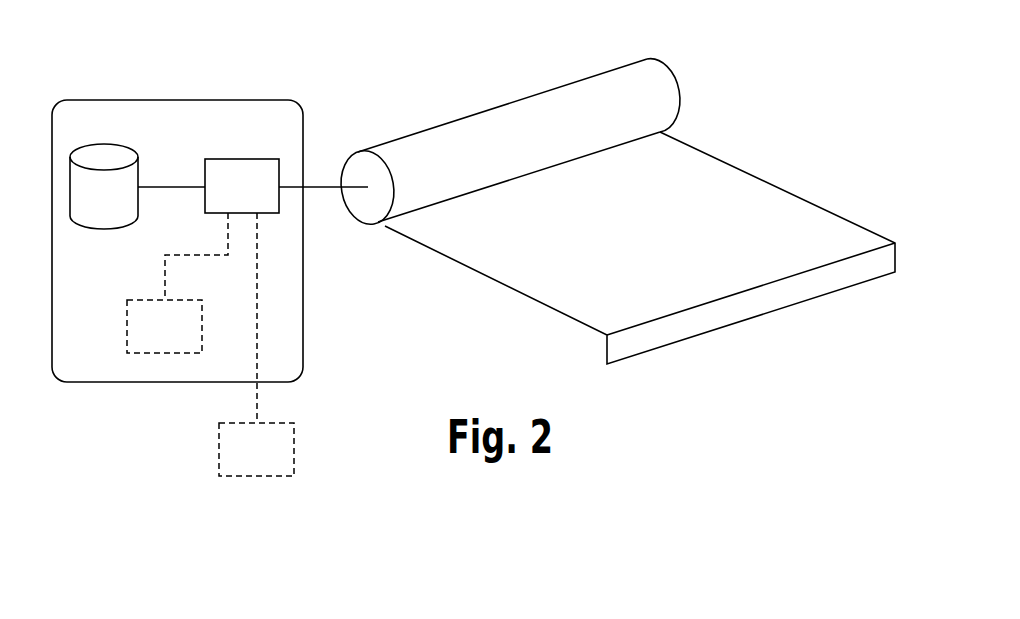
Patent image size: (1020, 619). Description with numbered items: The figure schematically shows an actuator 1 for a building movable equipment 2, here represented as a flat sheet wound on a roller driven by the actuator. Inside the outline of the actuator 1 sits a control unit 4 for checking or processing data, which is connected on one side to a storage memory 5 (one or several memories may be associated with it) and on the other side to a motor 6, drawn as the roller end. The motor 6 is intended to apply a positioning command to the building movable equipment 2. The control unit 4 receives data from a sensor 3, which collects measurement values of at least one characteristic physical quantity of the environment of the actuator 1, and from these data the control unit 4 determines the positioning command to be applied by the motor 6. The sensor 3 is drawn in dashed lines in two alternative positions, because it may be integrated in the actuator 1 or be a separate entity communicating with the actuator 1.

The actuator 1 is at (170, 100).
The building movable equipment 2 is at (720, 190).
The sensor 3 is at (165, 340).
The control unit 4 is at (243, 175).
The storage memory 5 is at (105, 155).
The motor 6 is at (365, 165).